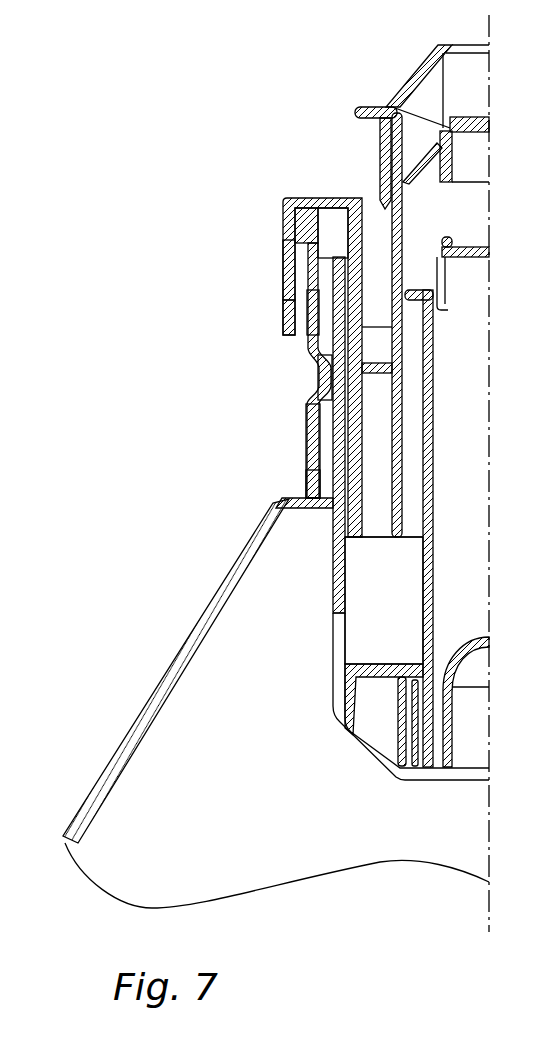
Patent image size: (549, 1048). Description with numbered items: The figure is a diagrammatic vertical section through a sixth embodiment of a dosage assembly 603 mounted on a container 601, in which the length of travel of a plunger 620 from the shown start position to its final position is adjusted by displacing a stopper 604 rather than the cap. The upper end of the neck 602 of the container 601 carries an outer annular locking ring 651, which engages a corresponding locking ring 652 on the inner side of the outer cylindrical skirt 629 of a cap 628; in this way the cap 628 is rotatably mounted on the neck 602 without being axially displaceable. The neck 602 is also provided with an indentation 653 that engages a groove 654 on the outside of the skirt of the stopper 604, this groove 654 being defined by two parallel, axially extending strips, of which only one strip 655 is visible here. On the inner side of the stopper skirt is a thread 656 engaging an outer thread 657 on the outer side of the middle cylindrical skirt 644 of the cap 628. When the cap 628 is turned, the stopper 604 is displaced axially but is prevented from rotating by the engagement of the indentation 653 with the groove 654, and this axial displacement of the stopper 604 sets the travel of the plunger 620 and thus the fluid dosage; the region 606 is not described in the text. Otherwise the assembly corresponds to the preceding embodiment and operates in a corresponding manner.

The container 601 is at (181, 642).
The neck 602 is at (313, 346).
The dosage assembly 603 is at (320, 138).
The stopper 604 is at (328, 570).
The chamber 606 is at (330, 547).
The plunger 620 is at (419, 428).
The cap 628 is at (281, 305).
The outer cylindrical skirt 629 is at (285, 293).
The middle cylindrical skirt 644 is at (330, 524).
The outer annular locking ring 651 is at (295, 210).
The locking ring 652 is at (300, 254).
The indentation 653 is at (320, 380).
The groove 654 is at (323, 423).
The strip 655 is at (323, 275).
The thread 656 is at (307, 327).
The outer thread 657 is at (307, 483).